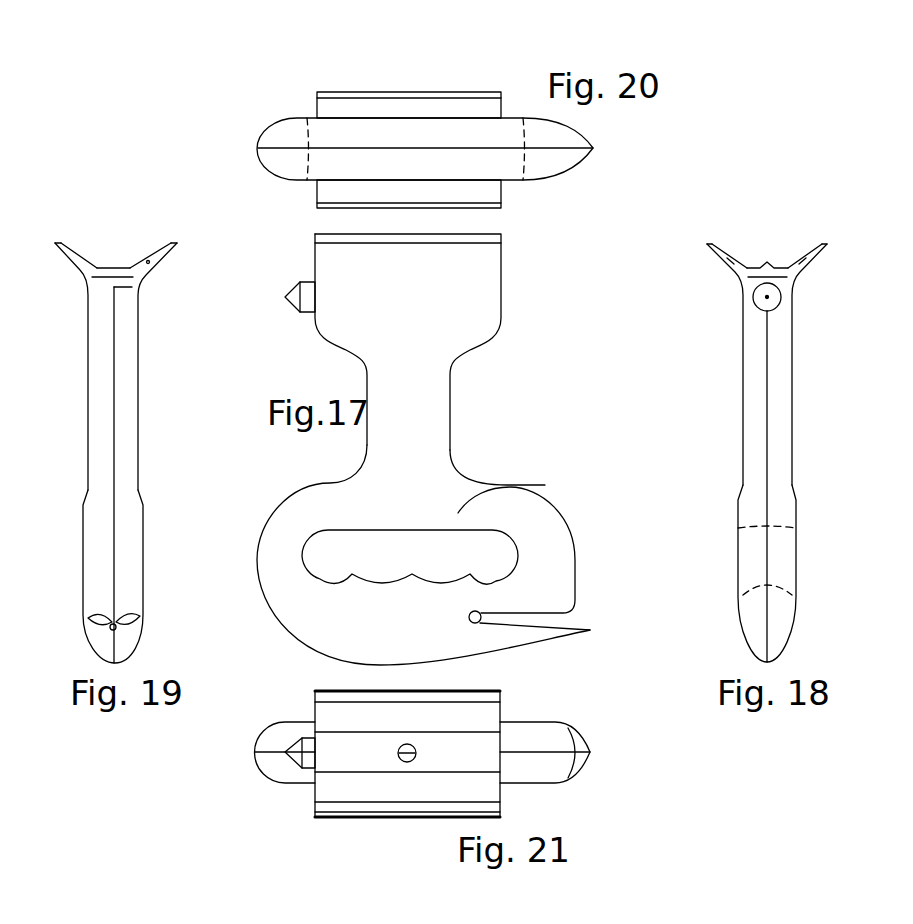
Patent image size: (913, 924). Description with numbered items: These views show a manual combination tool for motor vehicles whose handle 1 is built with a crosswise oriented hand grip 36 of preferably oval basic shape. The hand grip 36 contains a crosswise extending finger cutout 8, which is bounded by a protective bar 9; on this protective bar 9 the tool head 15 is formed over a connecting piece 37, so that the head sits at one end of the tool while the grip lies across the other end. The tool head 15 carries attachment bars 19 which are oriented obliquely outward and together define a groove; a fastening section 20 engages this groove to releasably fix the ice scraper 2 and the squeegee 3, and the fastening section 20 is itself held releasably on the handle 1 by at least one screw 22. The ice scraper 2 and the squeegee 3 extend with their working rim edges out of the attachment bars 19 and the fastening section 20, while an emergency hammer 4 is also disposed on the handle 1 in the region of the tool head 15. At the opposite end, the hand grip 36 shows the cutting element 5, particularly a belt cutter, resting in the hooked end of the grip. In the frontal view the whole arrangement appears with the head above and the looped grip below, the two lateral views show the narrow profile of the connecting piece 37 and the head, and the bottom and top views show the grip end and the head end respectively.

In FIG. 17, the handle 1 is at (431, 432).
In FIG. 19, the handle 1 is at (117, 424).
In FIG. 18, the handle 1 is at (768, 432).
In FIG. 17, the ice scraper 2 is at (338, 238).
In FIG. 21, the ice scraper 2 is at (330, 819).
In FIG. 19, the ice scraper 2 is at (58, 243).
In FIG. 18, the ice scraper 2 is at (825, 243).
In FIG. 21, the squeegee 3 is at (472, 690).
In FIG. 19, the squeegee 3 is at (172, 244).
In FIG. 18, the squeegee 3 is at (707, 243).
In FIG. 17, the emergency hammer 4 is at (290, 296).
In FIG. 21, the emergency hammer 4 is at (290, 760).
In FIG. 18, the emergency hammer 4 is at (776, 297).
In FIG. 17, the cutting element 5 is at (568, 618).
In FIG. 19, the cutting element 5 is at (132, 622).
In FIG. 20, the finger cutout 8 is at (420, 138).
In FIG. 17, the finger cutout 8 is at (330, 549).
In FIG. 18, the finger cutout 8 is at (758, 550).
In FIG. 17, the protective bar 9 is at (545, 485).
In FIG. 18, the protective bar 9 is at (782, 511).
In FIG. 20, the tool head 15 is at (328, 107).
In FIG. 17, the tool head 15 is at (458, 284).
In FIG. 19, the tool head 15 is at (140, 288).
In FIG. 18, the tool head 15 is at (783, 313).
In FIG. 18, the attachment bar 19 is at (723, 265).
In FIG. 21, the fastening section 20 is at (340, 720).
In FIG. 19, the fastening section 20 is at (92, 263).
In FIG. 18, the fastening section 20 is at (753, 265).
In FIG. 19, the screw 22 is at (118, 262).
In FIG. 20, the hand grip 36 is at (484, 155).
In FIG. 17, the hand grip 36 is at (540, 565).
In FIG. 21, the hand grip 36 is at (528, 737).
In FIG. 19, the hand grip 36 is at (125, 538).
In FIG. 18, the hand grip 36 is at (780, 577).
In FIG. 17, the connecting piece 37 is at (415, 416).
In FIG. 19, the connecting piece 37 is at (122, 393).
In FIG. 18, the connecting piece 37 is at (780, 430).